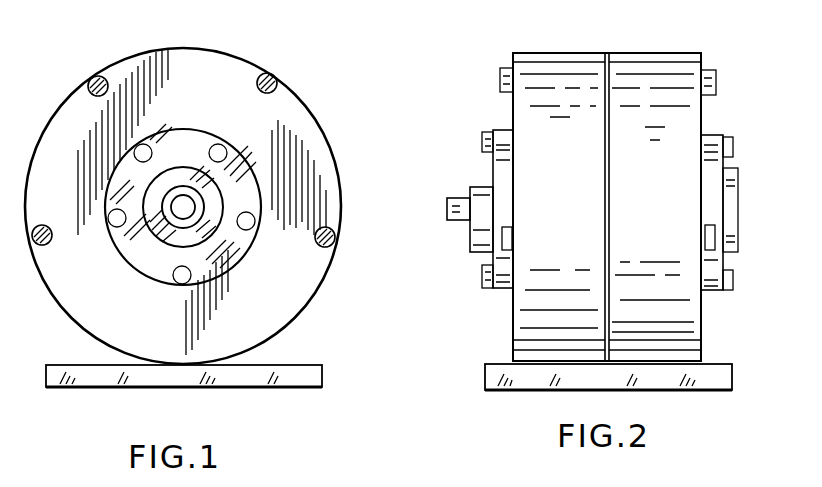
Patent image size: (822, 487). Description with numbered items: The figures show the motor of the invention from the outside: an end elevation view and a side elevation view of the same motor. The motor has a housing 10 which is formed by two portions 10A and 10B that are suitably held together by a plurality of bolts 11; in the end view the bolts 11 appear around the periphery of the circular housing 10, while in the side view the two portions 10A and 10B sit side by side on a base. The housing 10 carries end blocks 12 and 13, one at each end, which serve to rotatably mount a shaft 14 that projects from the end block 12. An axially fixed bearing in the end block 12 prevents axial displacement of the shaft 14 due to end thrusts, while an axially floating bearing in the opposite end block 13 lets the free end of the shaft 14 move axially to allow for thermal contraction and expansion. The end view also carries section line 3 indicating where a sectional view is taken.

In FIG. 1, the section line 3- 3 is at (140, 26).
In FIG. 1, the housing 10 is at (338, 128).
In FIG. 2, the housing 10 is at (514, 40).
In FIG. 2, the housing portion 10A is at (578, 199).
In FIG. 2, the housing portion 10B is at (672, 199).
In FIG. 1, the bolts 11 is at (92, 80).
In FIG. 1, the end block 12 is at (250, 163).
In FIG. 2, the end block 12 is at (500, 160).
In FIG. 2, the end block 13 is at (710, 136).
In FIG. 1, the shaft 14 is at (183, 207).
In FIG. 2, the shaft 14 is at (455, 222).